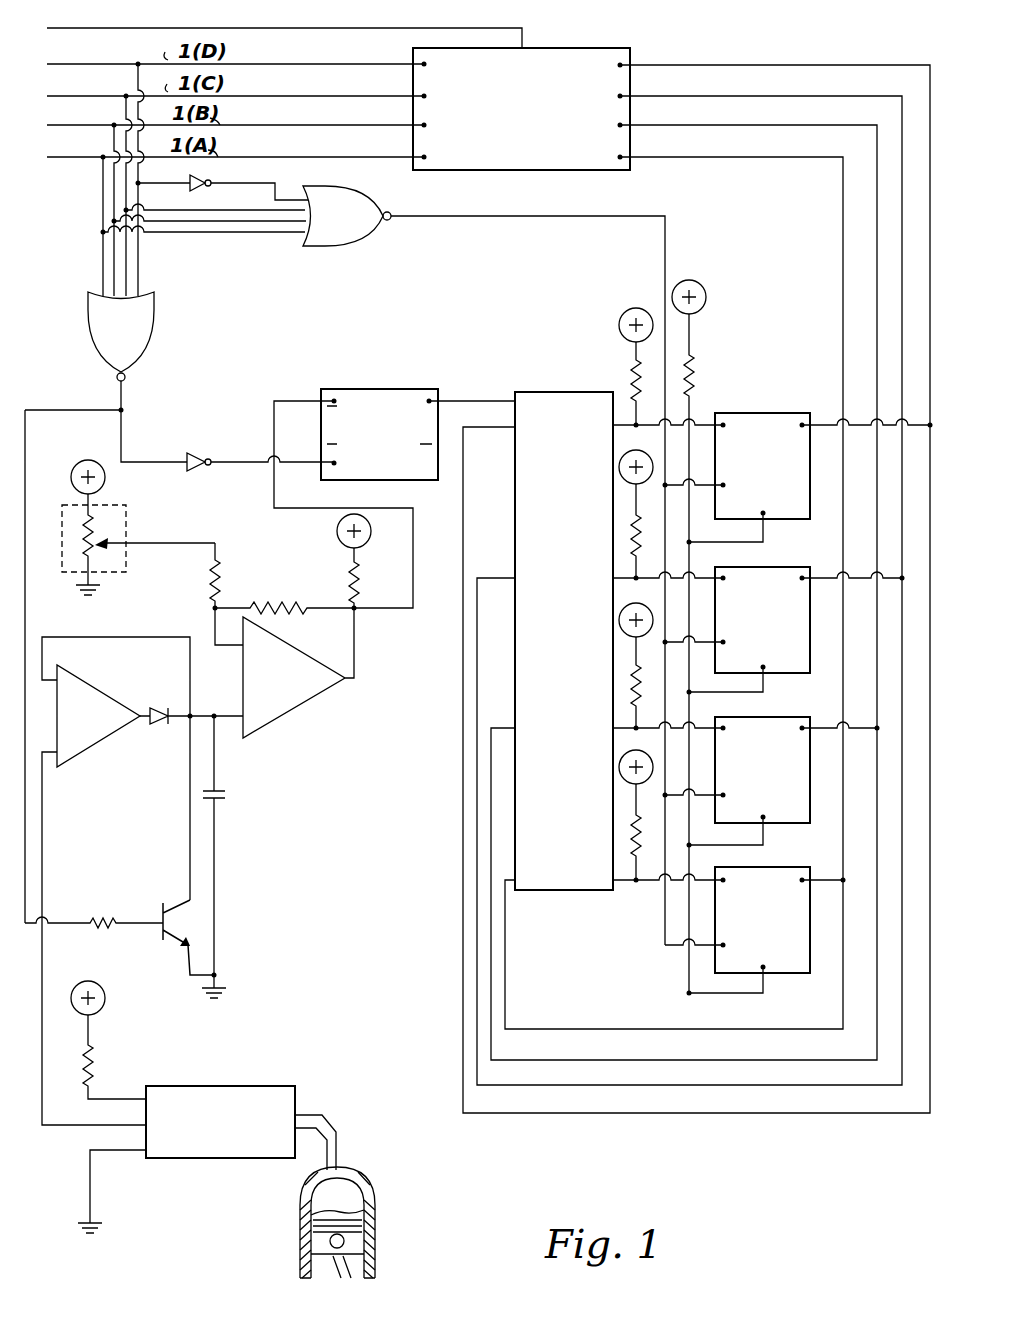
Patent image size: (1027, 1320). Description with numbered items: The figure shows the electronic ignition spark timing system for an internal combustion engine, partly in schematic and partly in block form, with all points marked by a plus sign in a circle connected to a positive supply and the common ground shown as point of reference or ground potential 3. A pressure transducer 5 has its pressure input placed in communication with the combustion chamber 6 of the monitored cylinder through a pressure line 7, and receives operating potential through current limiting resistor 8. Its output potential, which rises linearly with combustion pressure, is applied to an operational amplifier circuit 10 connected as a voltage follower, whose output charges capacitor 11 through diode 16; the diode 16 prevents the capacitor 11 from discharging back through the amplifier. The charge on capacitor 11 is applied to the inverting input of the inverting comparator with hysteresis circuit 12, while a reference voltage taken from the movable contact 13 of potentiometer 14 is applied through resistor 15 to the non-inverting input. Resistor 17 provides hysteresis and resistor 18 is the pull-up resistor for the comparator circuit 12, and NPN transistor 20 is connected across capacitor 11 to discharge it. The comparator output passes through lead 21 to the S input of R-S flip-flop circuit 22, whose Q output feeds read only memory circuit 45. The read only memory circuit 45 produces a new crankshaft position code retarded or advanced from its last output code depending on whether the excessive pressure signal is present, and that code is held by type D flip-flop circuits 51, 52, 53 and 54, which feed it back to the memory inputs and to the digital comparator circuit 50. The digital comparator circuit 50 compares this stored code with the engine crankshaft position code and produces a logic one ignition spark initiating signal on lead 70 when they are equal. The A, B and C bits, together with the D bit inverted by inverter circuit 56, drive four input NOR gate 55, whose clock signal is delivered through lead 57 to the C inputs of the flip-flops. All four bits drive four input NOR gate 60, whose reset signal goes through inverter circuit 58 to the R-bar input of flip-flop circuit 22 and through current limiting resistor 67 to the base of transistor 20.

The point of reference or ground potential 3 is at (92, 594).
The pressure transducer 5 is at (212, 1092).
The combustion chamber 6 is at (345, 1192).
The pressure line 7 is at (330, 1122).
The current limiting resistor 8 is at (95, 1065).
The operational amplifier circuit 10 is at (105, 708).
The capacitor 11 is at (222, 790).
The inverting comparator with hysteresis circuit 12 is at (278, 708).
The movable contact 13 is at (105, 542).
The potentiometer 14 is at (62, 567).
The resistor 15 is at (217, 578).
The diode 16 is at (158, 726).
The resistor 17 is at (292, 612).
The pull-up resistor 18 is at (352, 583).
The NPN transistor 20 is at (162, 935).
The lead 21 is at (413, 560).
The R-S flip-flop circuit 22 is at (378, 390).
The read only memory circuit 45 is at (582, 392).
The digital comparator circuit 50 is at (560, 48).
The type D flip-flop circuit 51 is at (780, 973).
The type D flip-flop circuit 52 is at (790, 823).
The type D flip-flop circuit 53 is at (788, 673).
The type D flip-flop circuit 54 is at (758, 413).
The four input NOR gate 55 is at (345, 238).
The inverter circuit 56 is at (205, 180).
The lead 57 is at (625, 220).
The inverter circuit 58 is at (198, 452).
The four input NOR gate 60 is at (148, 340).
The current limiting resistor 67 is at (93, 920).
The lead 70 is at (127, 13).